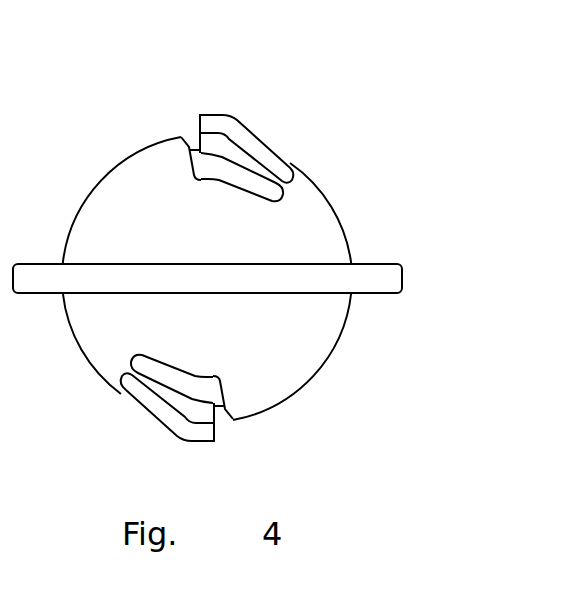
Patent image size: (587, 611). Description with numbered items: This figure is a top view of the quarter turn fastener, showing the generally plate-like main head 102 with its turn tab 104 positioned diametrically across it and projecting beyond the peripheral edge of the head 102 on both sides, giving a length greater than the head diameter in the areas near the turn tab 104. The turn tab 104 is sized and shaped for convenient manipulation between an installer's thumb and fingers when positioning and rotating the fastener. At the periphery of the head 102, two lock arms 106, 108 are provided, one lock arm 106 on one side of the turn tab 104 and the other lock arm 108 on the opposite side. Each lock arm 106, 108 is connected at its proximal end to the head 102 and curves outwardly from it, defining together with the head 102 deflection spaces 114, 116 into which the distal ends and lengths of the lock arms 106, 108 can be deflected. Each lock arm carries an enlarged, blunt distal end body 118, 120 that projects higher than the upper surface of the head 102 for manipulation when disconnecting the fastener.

The main head 102 is at (327, 224).
The turn tab 104 is at (383, 278).
The lock arm 106 is at (273, 157).
The lock arm 108 is at (140, 398).
The deflection space 114 is at (205, 168).
The deflection space 116 is at (181, 385).
The distal end body 118 is at (218, 120).
The distal end body 120 is at (208, 435).